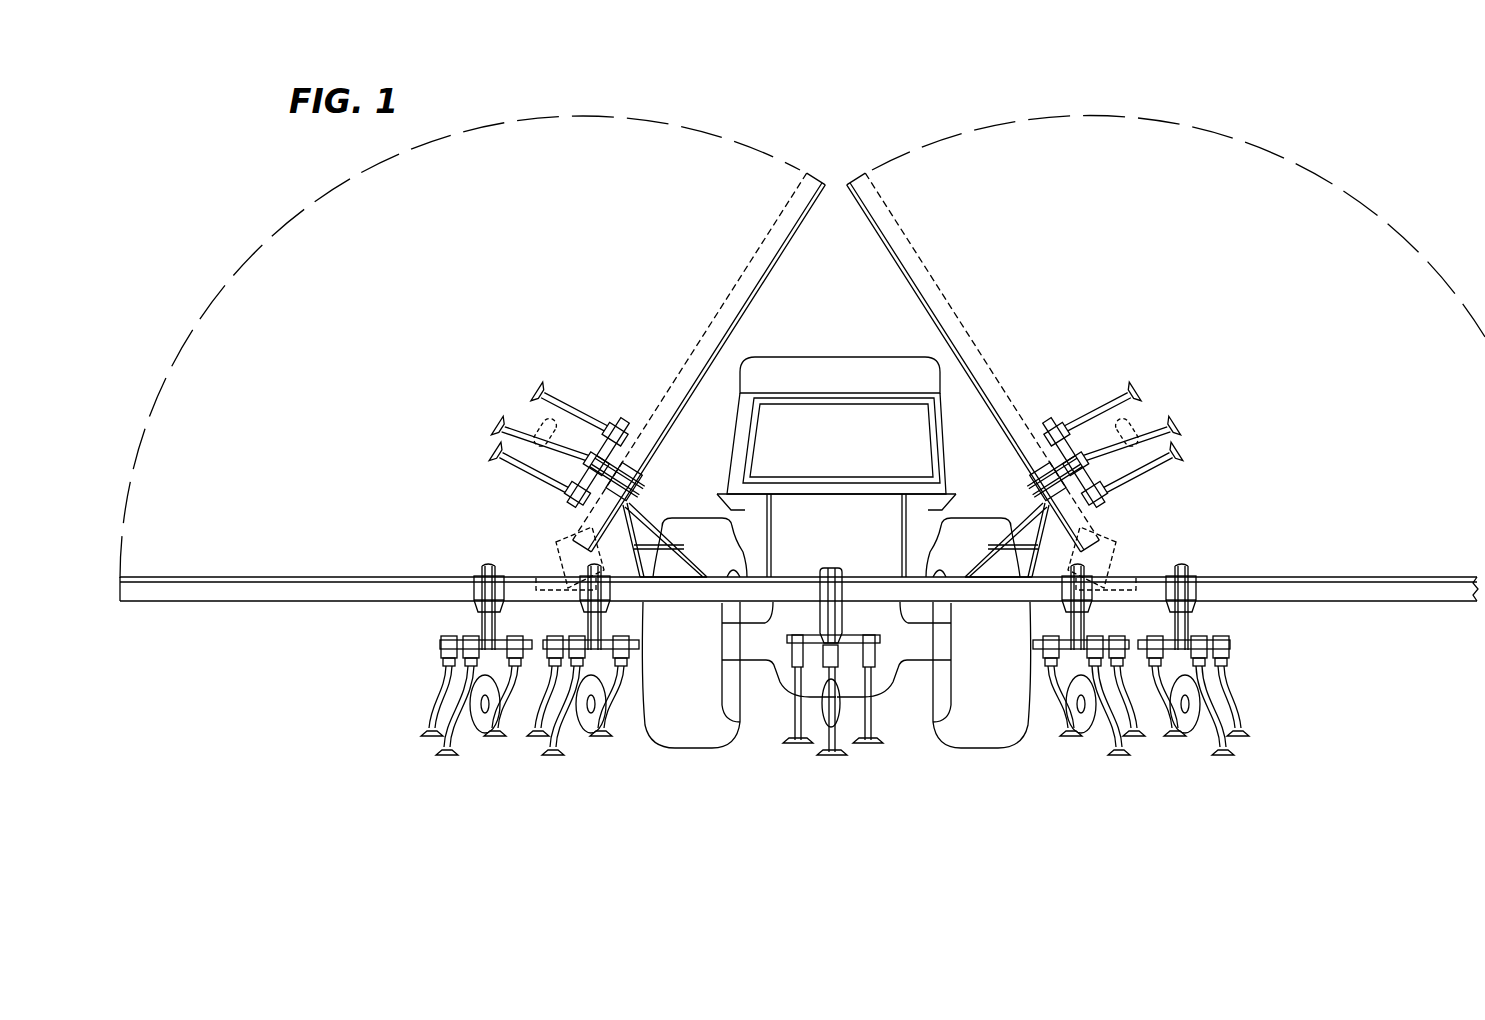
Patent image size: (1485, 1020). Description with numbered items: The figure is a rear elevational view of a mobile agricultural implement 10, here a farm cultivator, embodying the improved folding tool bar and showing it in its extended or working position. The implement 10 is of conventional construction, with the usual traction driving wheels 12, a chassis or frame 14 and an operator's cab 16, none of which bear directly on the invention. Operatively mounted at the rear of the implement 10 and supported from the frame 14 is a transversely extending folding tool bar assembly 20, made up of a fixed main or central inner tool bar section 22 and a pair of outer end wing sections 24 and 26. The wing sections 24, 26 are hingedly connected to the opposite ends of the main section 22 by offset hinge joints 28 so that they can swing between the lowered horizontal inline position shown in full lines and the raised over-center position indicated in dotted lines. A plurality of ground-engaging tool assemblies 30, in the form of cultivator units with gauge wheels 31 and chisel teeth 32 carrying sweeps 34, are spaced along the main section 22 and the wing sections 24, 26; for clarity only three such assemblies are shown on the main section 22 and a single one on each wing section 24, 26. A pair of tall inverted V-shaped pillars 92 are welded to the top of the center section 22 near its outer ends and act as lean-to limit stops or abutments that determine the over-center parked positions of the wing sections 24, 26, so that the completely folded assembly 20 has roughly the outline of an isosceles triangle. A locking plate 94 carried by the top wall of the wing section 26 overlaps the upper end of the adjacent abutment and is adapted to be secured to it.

The mobile agricultural implement 10 is at (838, 318).
The traction driving wheels 12 is at (700, 745).
The chassis or frame 14 is at (910, 530).
The operator's cab 16 is at (870, 372).
The folding tool bar assembly 20 is at (326, 569).
The main or central inner tool bar section 22 is at (810, 570).
The wing section 24 is at (736, 288).
The wing section 26 is at (948, 286).
The offset hinge joints 28 is at (566, 540).
The ground-engaging tool assemblies 30 is at (828, 562).
The gauge wheels 31 is at (483, 733).
The chisel teeth 32 is at (452, 704).
The sweeps 34 is at (432, 740).
The inverted V-shaped pillars 92 is at (657, 520).
The locking plate 94 is at (498, 568).